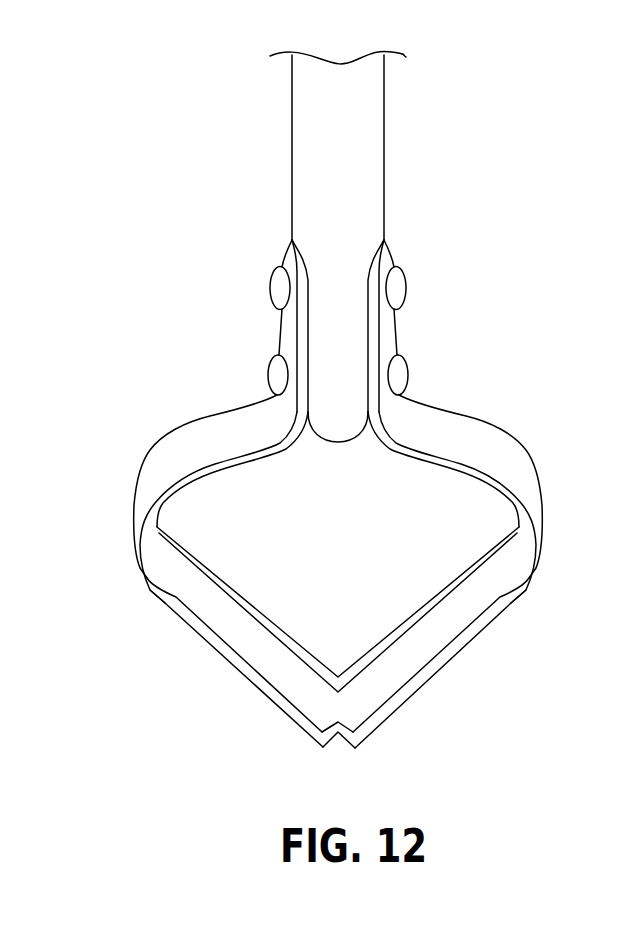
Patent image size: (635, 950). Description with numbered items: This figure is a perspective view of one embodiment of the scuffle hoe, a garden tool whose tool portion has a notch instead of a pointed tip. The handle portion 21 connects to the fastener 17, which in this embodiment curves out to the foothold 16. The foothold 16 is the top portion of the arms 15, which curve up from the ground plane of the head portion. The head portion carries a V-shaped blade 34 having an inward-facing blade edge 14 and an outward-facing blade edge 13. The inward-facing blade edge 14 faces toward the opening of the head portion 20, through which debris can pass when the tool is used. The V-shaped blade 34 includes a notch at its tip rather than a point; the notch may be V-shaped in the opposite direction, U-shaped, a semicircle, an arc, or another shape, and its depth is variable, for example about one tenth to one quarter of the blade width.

The handle portion 21 is at (320, 213).
The fastener 17 is at (388, 327).
The foothold 16 is at (463, 443).
The opening of the head portion 20 is at (318, 500).
The arms 15 is at (546, 540).
The inward-facing blade edge 14 is at (418, 608).
The outward-facing blade edge 13 is at (438, 662).
The V-shaped blade 34 is at (337, 743).